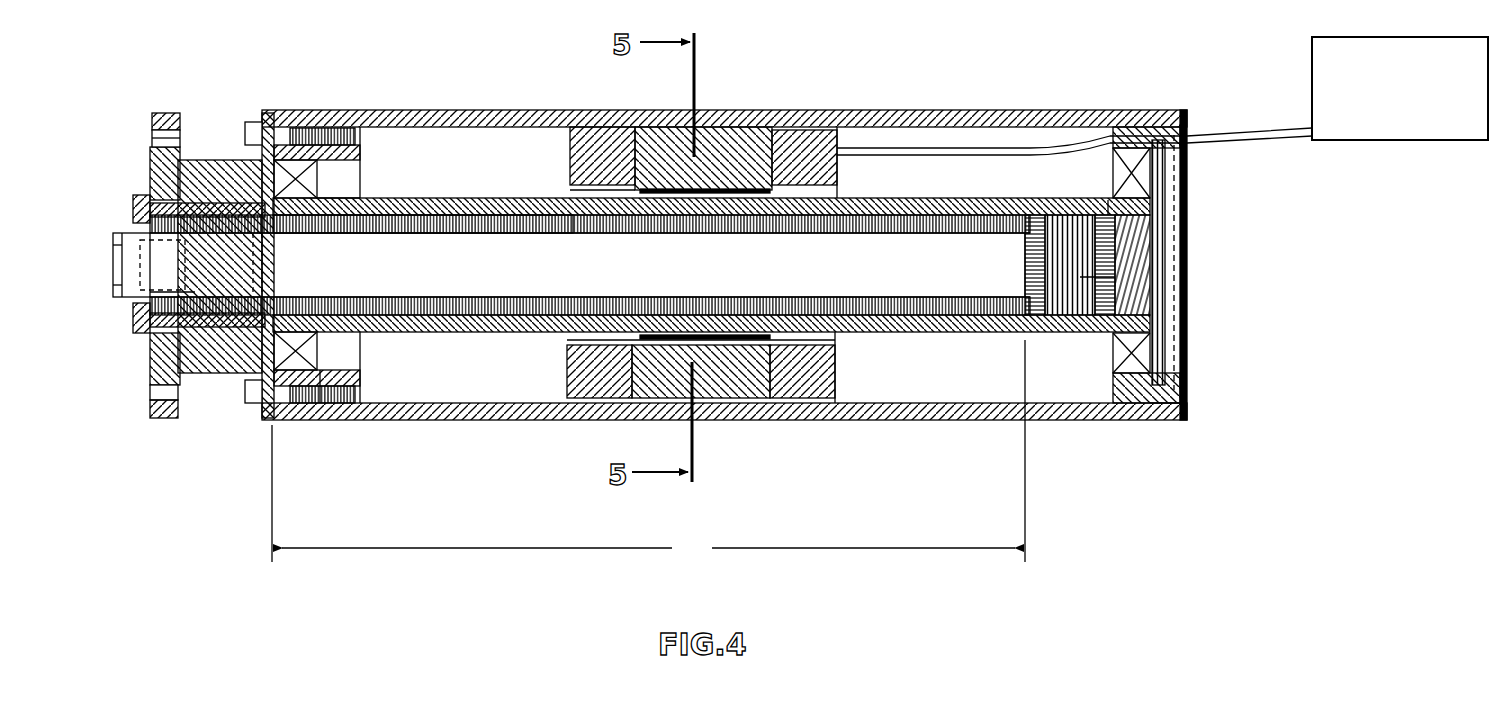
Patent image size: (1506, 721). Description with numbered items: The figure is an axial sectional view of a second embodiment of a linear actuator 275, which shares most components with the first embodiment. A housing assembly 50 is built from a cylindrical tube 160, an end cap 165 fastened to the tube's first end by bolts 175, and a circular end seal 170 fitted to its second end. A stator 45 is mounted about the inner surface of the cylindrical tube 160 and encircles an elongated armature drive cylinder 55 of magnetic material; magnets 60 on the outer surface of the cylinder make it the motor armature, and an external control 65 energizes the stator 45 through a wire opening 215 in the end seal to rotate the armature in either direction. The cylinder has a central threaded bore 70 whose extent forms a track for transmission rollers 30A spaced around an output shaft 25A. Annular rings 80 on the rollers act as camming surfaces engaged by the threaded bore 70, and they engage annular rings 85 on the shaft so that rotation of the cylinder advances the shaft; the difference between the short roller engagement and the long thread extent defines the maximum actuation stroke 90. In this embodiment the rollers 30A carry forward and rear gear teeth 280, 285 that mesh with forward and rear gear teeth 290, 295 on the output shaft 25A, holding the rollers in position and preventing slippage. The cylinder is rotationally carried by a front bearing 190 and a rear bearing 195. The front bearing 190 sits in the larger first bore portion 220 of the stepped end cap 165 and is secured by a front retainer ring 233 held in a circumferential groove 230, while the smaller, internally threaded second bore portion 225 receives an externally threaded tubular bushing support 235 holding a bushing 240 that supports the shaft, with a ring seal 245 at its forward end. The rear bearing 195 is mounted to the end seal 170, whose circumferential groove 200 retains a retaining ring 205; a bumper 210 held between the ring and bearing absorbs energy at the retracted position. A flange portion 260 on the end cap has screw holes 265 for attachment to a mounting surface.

The output shaft 25A is at (437, 258).
The transmission rollers 30A is at (1022, 241).
The stator 45 is at (725, 148).
The housing assembly 50 is at (822, 112).
The armature drive cylinder 55 is at (920, 200).
The magnets 60 is at (728, 188).
The external control 65 is at (1360, 45).
The threaded bore 70 is at (520, 216).
The annular rings 80 is at (1060, 220).
The annular rings 85 is at (1080, 277).
The maximum actuation stroke 90 is at (648, 452).
The cylindrical tube 160 is at (640, 112).
The end cap 165 is at (232, 160).
The circular end seal 170 is at (1188, 305).
The bolts 175 is at (300, 140).
The front bearing 190 is at (305, 182).
The rear bearing 195 is at (1130, 160).
The circumferential groove 200 is at (1165, 377).
The retaining ring 205 is at (1167, 362).
The bumper 210 is at (1182, 418).
The wire opening 215 is at (1187, 135).
The first bore portion 220 is at (345, 166).
The second bore portion 225 is at (272, 236).
The circumferential groove 230 is at (330, 372).
The front retainer ring 233 is at (312, 386).
The tubular bushing support 235 is at (134, 196).
The bushing 240 is at (190, 236).
The ring seal 245 is at (155, 293).
The flange portion 260 is at (176, 113).
The screw holes 265 is at (177, 134).
The linear actuator 275 is at (953, 50).
The forward gear teeth 280 is at (1038, 225).
The rear gear teeth 285 is at (1108, 213).
The forward gear teeth 290 is at (1025, 270).
The rear gear teeth 295 is at (1110, 243).